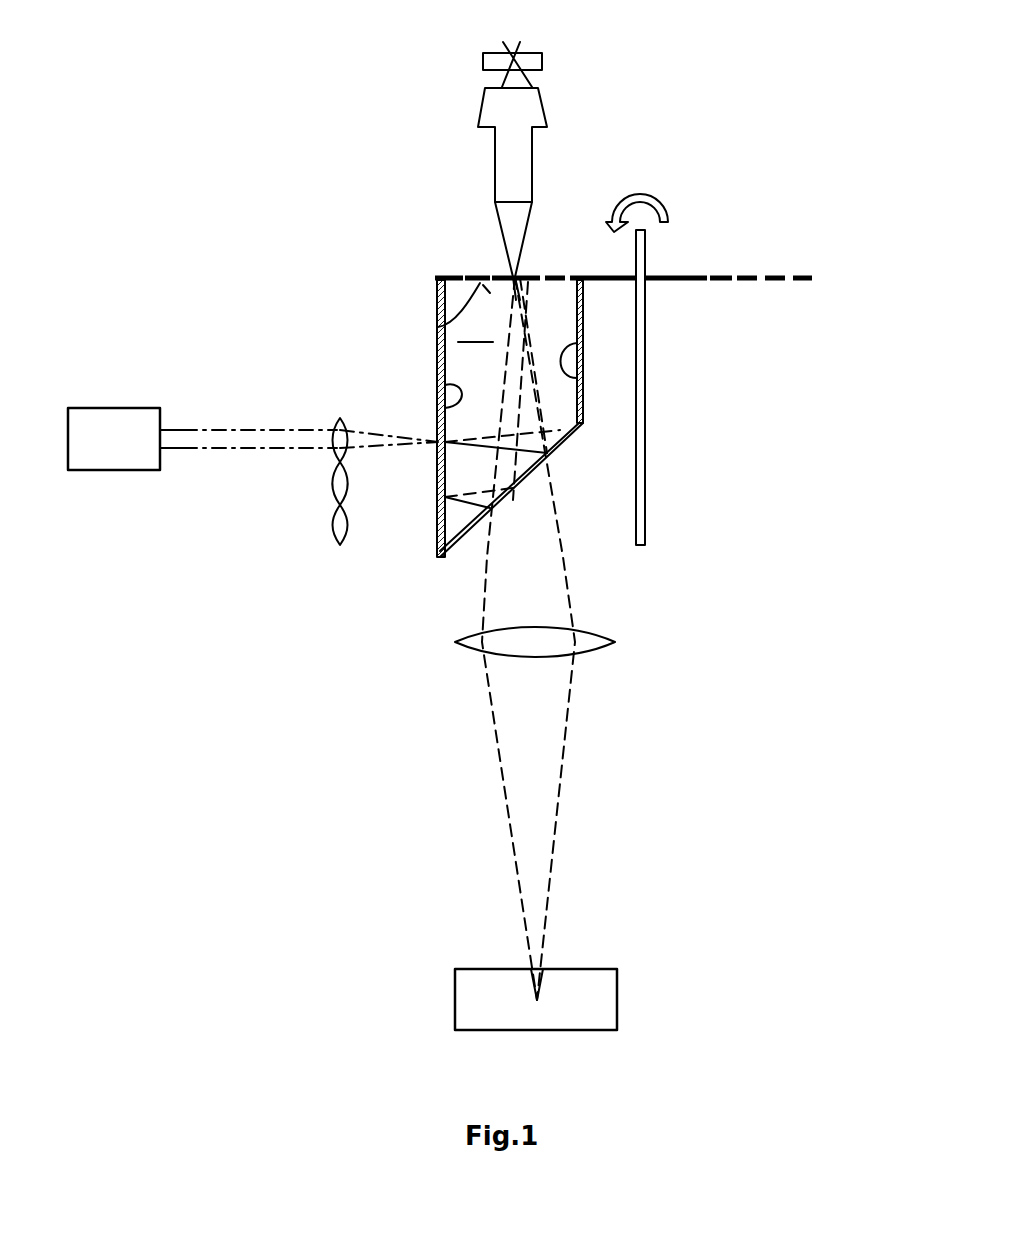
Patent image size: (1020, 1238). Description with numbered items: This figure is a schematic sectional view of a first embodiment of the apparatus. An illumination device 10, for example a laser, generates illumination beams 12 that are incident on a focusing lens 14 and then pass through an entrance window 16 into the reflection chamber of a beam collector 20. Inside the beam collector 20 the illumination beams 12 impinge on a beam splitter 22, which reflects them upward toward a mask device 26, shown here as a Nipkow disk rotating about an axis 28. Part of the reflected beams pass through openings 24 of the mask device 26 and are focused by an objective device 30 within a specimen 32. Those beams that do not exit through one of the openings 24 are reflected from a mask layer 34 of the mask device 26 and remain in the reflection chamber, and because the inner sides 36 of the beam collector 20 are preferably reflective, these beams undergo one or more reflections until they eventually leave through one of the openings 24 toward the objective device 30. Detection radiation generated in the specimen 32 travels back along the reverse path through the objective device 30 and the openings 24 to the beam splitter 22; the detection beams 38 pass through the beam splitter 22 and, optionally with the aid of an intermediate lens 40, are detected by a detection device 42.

The illumination device 10 is at (103, 420).
The illumination beams 12 is at (203, 437).
The focusing lens 14 is at (337, 437).
The entrance window 16 is at (438, 443).
The beam collector 20 is at (477, 385).
The beam splitter 22 is at (520, 487).
The openings 24 is at (490, 277).
The mask device 26 is at (673, 277).
The axis 28 is at (640, 325).
The objective device 30 is at (517, 167).
The specimen 32 is at (532, 62).
The mask layer 34 is at (438, 327).
The inner sides 36 is at (438, 403).
The detection beams 38 is at (513, 572).
The intermediate lens 40 is at (460, 642).
The detection device 42 is at (478, 990).